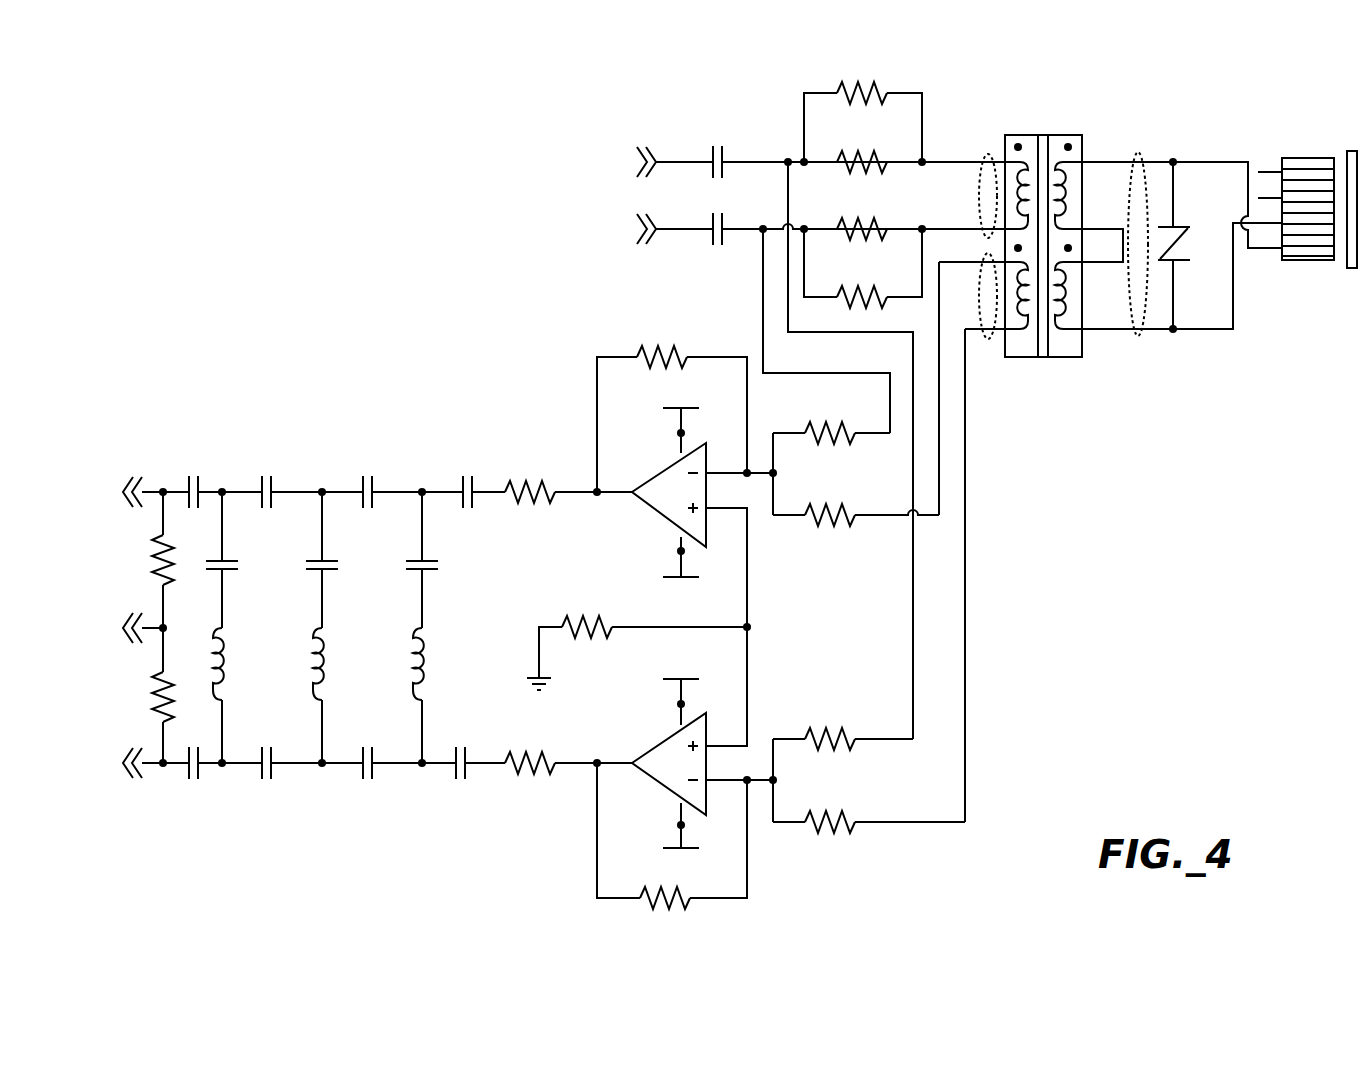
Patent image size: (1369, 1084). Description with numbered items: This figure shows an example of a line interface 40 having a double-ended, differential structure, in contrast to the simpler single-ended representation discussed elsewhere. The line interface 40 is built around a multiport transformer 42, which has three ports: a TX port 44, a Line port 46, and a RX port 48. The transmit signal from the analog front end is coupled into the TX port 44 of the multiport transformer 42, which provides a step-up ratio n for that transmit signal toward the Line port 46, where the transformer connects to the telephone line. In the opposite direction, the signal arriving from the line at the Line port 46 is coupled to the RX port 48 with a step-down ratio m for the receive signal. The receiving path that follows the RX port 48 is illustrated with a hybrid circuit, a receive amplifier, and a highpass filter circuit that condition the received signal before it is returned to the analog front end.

The line interface 40 is at (392, 250).
The multiport transformer 42 is at (1081, 122).
The TX port 44 is at (988, 152).
The Line port 46 is at (1138, 337).
The RX port 48 is at (985, 340).